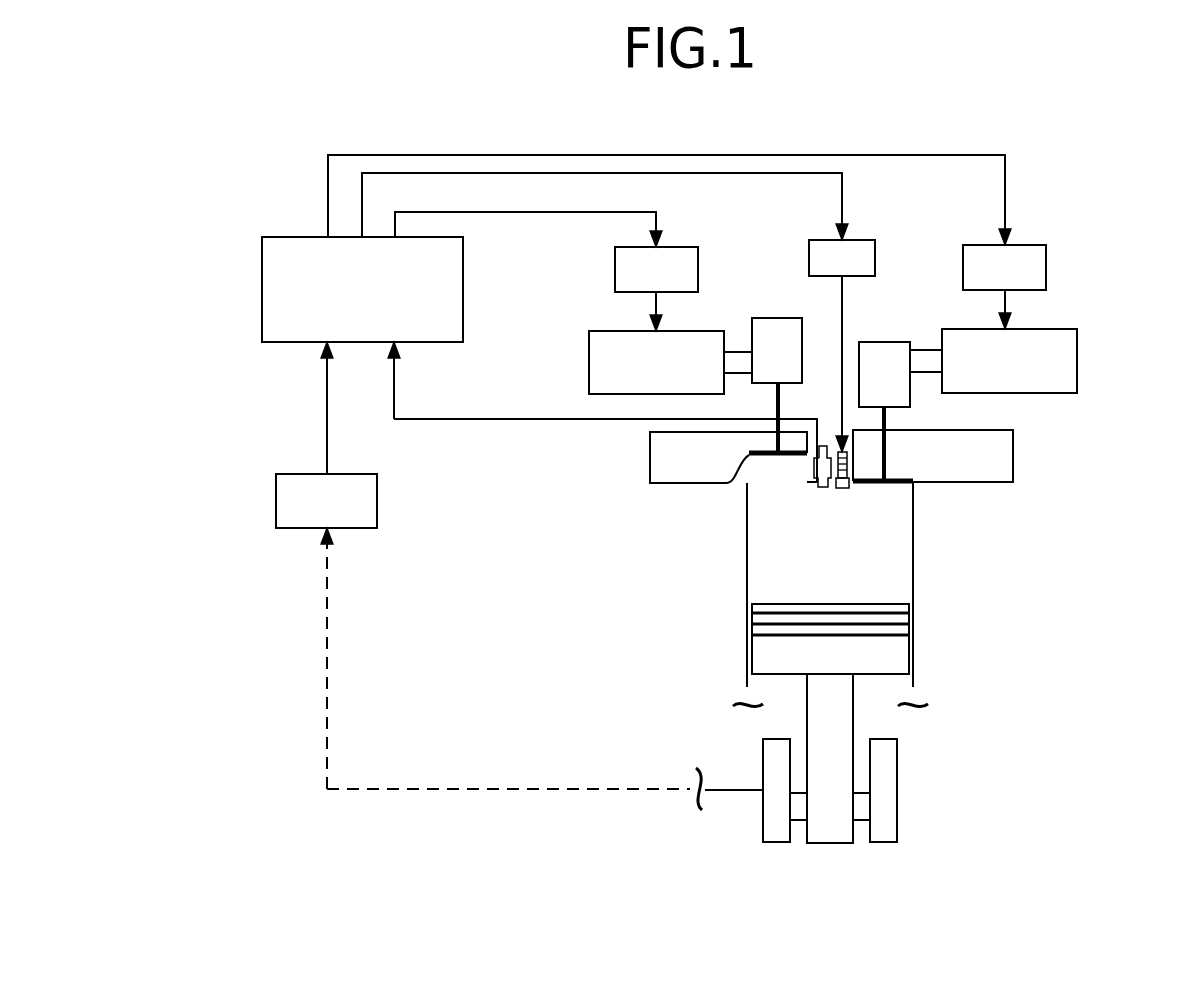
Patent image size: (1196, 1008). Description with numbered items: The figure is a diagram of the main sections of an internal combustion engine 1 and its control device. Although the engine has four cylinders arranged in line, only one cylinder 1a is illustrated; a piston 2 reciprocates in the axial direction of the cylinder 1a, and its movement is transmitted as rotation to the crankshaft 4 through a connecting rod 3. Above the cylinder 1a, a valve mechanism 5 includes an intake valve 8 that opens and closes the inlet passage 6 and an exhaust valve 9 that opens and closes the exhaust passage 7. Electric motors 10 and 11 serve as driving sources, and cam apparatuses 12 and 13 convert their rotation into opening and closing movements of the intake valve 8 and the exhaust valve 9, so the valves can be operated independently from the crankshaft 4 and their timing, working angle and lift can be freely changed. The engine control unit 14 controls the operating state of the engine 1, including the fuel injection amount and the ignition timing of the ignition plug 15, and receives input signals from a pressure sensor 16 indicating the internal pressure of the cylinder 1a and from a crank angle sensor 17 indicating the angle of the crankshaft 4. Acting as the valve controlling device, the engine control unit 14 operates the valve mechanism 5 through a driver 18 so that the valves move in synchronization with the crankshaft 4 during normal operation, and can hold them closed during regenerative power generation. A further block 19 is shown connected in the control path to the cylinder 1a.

The internal combustion engine 1 is at (913, 583).
The cylinder 1a is at (762, 580).
The piston 2 is at (780, 660).
The connecting rod 3 is at (828, 833).
The crankshaft 4 is at (885, 822).
The valve mechanism 5 is at (1105, 290).
The inlet passage 6 is at (650, 455).
The exhaust passage 7 is at (1010, 458).
The intake valve 8 is at (733, 483).
The exhaust valve 9 is at (893, 483).
The electric motor 10 is at (605, 355).
The electric motor 11 is at (1040, 352).
The cam apparatus 12 is at (785, 330).
The cam apparatus 13 is at (870, 355).
The engine control unit 14 is at (290, 292).
The ignition plug 15 is at (850, 487).
The pressure sensor 16 is at (818, 487).
The crank angle sensor 17 is at (292, 503).
The driver 18 is at (628, 275).
The injector driver 19 is at (858, 247).